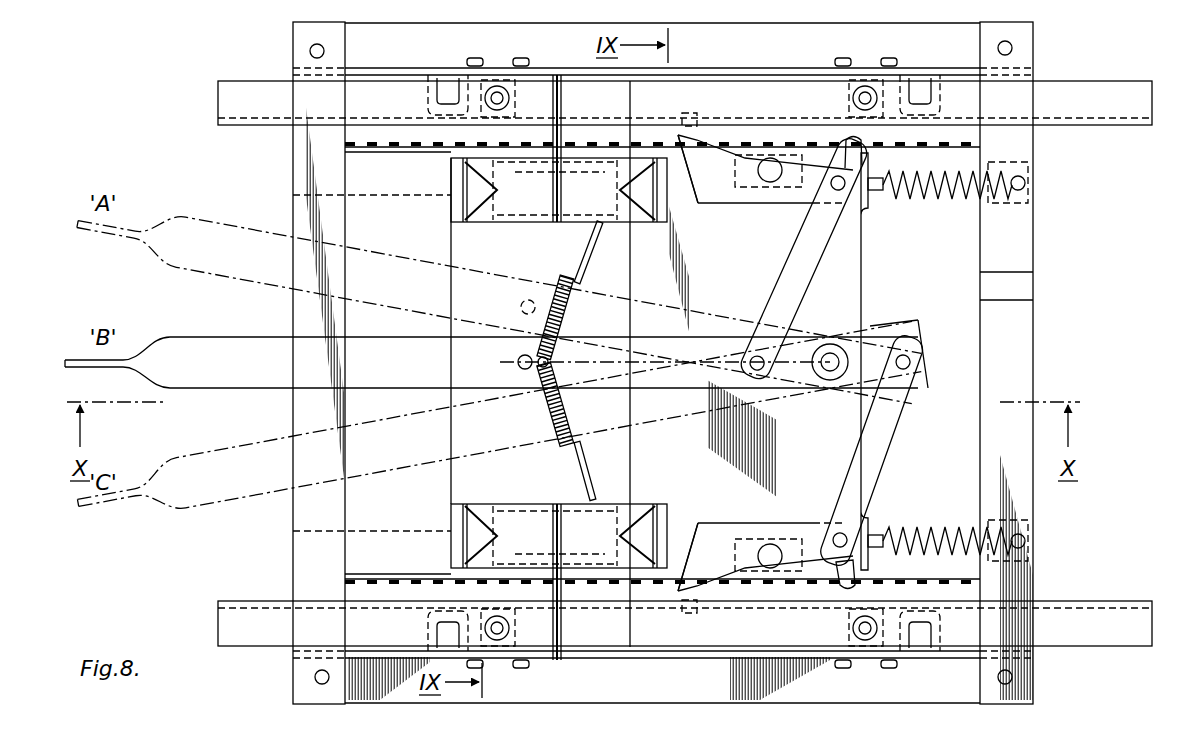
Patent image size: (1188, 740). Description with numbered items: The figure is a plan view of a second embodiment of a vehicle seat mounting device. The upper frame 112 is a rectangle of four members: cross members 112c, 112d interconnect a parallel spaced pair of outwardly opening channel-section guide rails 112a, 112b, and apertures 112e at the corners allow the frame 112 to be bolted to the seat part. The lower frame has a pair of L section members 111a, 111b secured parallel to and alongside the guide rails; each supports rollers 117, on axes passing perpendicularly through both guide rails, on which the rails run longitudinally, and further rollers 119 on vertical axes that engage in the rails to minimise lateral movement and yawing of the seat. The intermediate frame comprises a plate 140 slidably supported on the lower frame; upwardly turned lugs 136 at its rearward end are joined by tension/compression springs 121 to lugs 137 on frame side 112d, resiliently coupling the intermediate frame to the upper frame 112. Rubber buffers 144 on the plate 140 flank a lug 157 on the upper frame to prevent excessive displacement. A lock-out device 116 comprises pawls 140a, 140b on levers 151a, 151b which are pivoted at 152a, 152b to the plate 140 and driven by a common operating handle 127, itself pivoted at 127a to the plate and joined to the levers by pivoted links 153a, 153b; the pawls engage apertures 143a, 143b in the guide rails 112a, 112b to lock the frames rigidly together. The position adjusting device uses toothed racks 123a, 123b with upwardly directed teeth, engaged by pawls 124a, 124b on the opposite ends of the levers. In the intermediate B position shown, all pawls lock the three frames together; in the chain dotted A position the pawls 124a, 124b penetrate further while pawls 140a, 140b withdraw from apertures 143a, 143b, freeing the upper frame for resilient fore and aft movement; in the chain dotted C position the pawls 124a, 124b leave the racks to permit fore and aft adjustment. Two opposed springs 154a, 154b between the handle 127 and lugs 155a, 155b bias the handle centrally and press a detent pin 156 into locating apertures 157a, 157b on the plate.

The upper frame 112 is at (958, 77).
The guide rail 112a is at (243, 112).
The guide rail 112b is at (243, 610).
The cross member 112c is at (298, 315).
The cross member 112d is at (1015, 283).
The aperture 112e is at (310, 51).
The L section member 111a is at (676, 56).
The L section member 111b is at (678, 695).
The lock-out device 116 is at (678, 162).
The roller 117 is at (432, 100).
The roller 119 is at (503, 85).
The tension/compression spring 121 is at (935, 200).
The toothed rack 123a is at (375, 155).
The toothed rack 123b is at (395, 572).
The pawl 124a is at (856, 142).
The pawl 124b is at (850, 588).
The operating handle 127 is at (205, 372).
The pivot 127a is at (830, 382).
The lug 136 is at (876, 192).
The lug 137 is at (1030, 183).
The plate 140 is at (862, 270).
The pawl 140a is at (688, 135).
The pawl 140b is at (688, 593).
The aperture 143a is at (697, 120).
The aperture 143b is at (700, 606).
The rubber buffer 144 is at (470, 192).
The lever 151a is at (712, 190).
The lever 151b is at (727, 540).
The pivot 152a is at (770, 183).
The pivot 152b is at (772, 545).
The pivoted link 153a is at (788, 295).
The pivoted link 153b is at (887, 427).
The spring 154a is at (562, 302).
The spring 154b is at (565, 413).
The lug 155a is at (592, 255).
The lug 155b is at (592, 485).
The detent pin 156 is at (515, 360).
The lug 157 is at (557, 195).
The locating aperture 157a is at (522, 300).
The locating aperture 157b is at (520, 356).